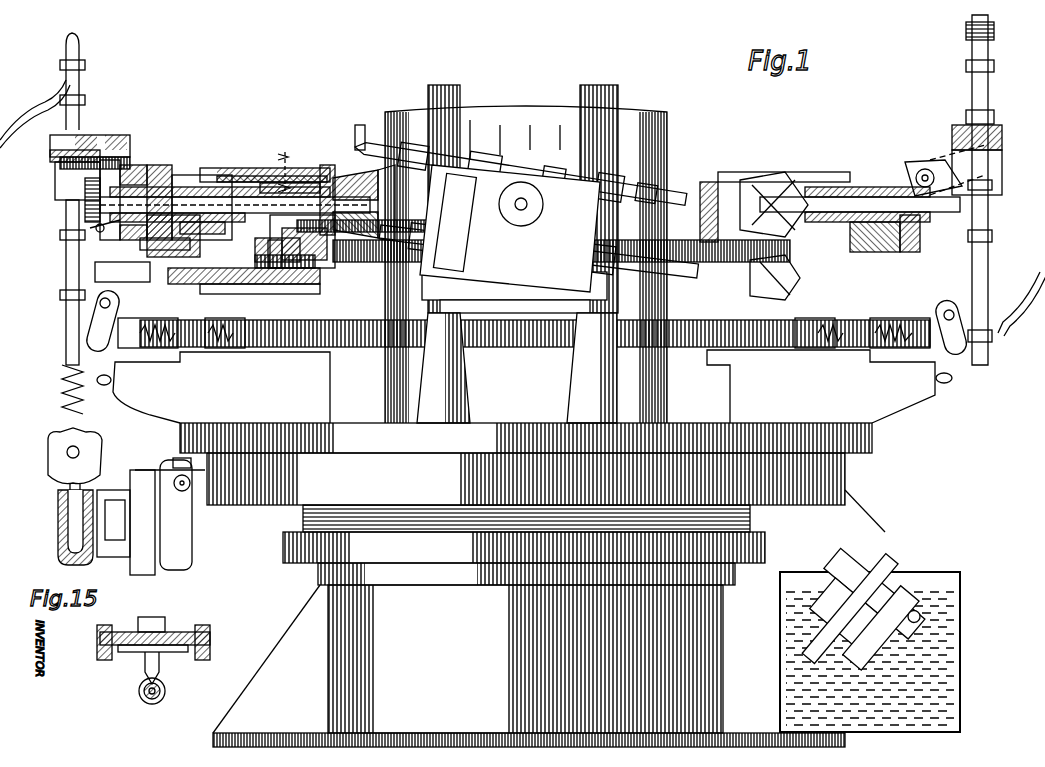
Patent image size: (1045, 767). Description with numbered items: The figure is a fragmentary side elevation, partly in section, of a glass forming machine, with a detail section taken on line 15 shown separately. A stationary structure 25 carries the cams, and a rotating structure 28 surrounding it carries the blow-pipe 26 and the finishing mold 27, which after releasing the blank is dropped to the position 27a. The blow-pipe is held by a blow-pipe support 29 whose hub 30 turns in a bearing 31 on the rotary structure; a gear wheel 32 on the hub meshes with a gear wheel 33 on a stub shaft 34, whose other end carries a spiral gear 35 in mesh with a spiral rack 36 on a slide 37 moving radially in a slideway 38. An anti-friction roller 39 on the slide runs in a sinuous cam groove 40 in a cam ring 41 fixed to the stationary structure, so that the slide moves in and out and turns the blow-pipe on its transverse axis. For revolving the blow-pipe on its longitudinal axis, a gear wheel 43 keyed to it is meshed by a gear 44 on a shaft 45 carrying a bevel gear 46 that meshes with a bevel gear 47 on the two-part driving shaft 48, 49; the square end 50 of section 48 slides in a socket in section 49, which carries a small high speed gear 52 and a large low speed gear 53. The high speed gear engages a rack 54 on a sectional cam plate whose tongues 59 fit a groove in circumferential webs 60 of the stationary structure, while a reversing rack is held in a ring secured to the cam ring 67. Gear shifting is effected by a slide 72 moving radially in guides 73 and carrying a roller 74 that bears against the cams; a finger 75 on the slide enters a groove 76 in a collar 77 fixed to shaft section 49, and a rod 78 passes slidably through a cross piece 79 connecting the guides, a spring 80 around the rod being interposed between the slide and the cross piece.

In FIG. 1, the section line 15 is at (286, 163).
In FIG. 1, the stationary structure 25 is at (410, 175).
In FIG. 1, the blow-pipe 26 is at (100, 192).
In FIG. 1, the finishing mold 27 is at (62, 516).
In FIG. 1, the dropped position of finishing mold 27a is at (925, 640).
In FIG. 1, the rotating structure 28 is at (188, 366).
In FIG. 1, the blow-pipe support 29 is at (118, 165).
In FIG. 1, the hub 30 is at (178, 175).
In FIG. 1, the bearing 31 is at (195, 187).
In FIG. 1, the gear wheel 32 is at (160, 165).
In FIG. 1, the gear wheel 33 is at (190, 283).
In FIG. 1, the stub shaft 34 is at (160, 262).
In FIG. 1, the spiral gear 35 is at (242, 284).
In FIG. 1, the spiral rack 36 is at (215, 268).
In FIG. 1, the slide 37 is at (290, 276).
In FIG. 1, the slideway 38 is at (300, 262).
In FIG. 1, the anti-friction roller 39 is at (278, 270).
In FIG. 1, the cam groove 40 is at (345, 195).
In FIG. 1, the cam ring 41 is at (310, 362).
In FIG. 1, the gear wheel 43 is at (62, 138).
In FIG. 1, the gear 44 is at (99, 135).
In FIG. 1, the shaft 45 is at (97, 163).
In FIG. 1, the bevel gear 46 is at (140, 165).
In FIG. 1, the bevel gear 47 is at (100, 230).
In FIG. 1, the driving shaft section 48 is at (258, 197).
In FIG. 1, the driving shaft section 49 is at (362, 150).
In FIG. 15, the driving shaft section 49 is at (146, 700).
In FIG. 1, the square end 50 is at (280, 230).
In FIG. 1, the high speed gear 52 is at (418, 172).
In FIG. 1, the low speed gear 53 is at (310, 255).
In FIG. 1, the rack 54 is at (400, 160).
In FIG. 1, the tongues 59 is at (672, 175).
In FIG. 1, the circumferential webs 60 is at (668, 170).
In FIG. 1, the cam ring 67 is at (385, 210).
In FIG. 1, the slide 72 is at (258, 210).
In FIG. 15, the slide 72 is at (128, 632).
In FIG. 1, the guides 73 is at (272, 228).
In FIG. 15, the guides 73 is at (98, 648).
In FIG. 1, the roller 74 is at (330, 190).
In FIG. 15, the roller 74 is at (155, 622).
In FIG. 1, the finger 75 is at (368, 135).
In FIG. 15, the finger 75 is at (147, 665).
In FIG. 15, the groove 76 is at (162, 686).
In FIG. 15, the collar 77 is at (158, 700).
In FIG. 1, the rod 78 is at (242, 175).
In FIG. 1, the cross piece 79 is at (222, 176).
In FIG. 1, the spring 80 is at (218, 168).